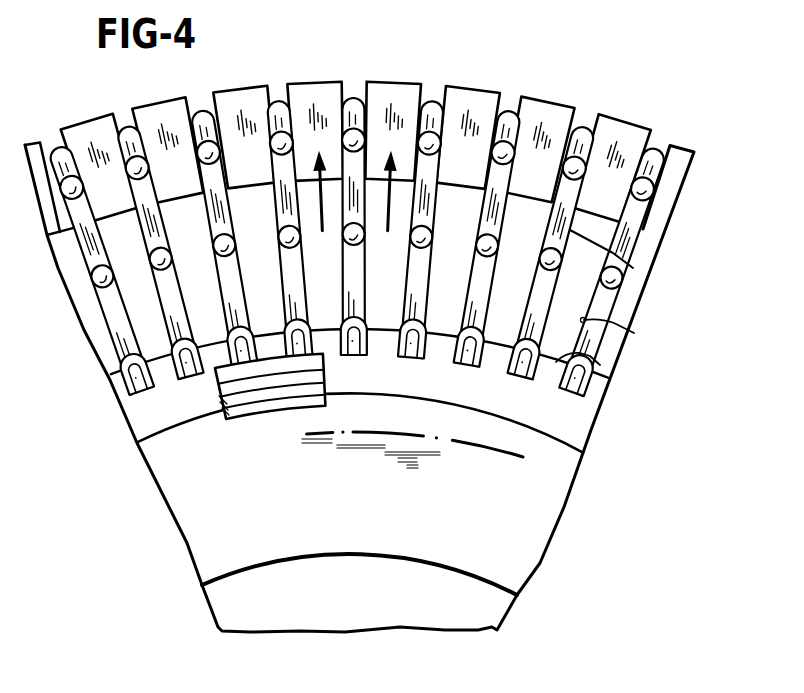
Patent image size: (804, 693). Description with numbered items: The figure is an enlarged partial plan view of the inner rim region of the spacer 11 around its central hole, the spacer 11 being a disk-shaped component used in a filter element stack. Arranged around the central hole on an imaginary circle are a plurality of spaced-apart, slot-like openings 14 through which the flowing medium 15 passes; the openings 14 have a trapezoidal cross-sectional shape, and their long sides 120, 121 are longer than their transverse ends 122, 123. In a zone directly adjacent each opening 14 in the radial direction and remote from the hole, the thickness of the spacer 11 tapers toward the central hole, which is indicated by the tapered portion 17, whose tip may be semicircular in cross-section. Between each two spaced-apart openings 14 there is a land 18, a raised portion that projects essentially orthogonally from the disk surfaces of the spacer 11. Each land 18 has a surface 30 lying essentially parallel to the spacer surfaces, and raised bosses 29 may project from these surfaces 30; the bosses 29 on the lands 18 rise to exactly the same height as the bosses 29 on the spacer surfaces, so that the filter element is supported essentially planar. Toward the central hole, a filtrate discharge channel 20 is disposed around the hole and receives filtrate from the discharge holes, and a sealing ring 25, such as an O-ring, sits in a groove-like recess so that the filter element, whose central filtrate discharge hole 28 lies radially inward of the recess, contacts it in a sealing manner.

The spacer 11 is at (390, 68).
The openings 14 is at (586, 306).
The flowing medium 15 is at (388, 203).
The tapered portion 17 is at (470, 113).
The land 18 is at (508, 108).
The filtrate discharge channel 20 is at (135, 431).
The sealing ring 25 is at (270, 403).
The central filtrate discharge hole 28 is at (520, 462).
The bosses 29 is at (506, 147).
The land surface 30 is at (655, 183).
The long side of opening 120 is at (634, 333).
The long side of opening 121 is at (633, 268).
The transverse end of opening 122 is at (599, 222).
The transverse end of opening 123 is at (601, 363).